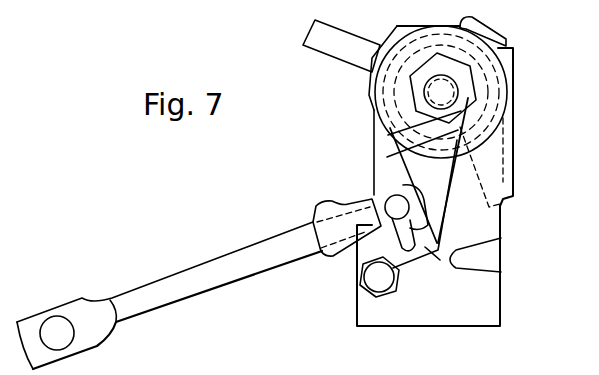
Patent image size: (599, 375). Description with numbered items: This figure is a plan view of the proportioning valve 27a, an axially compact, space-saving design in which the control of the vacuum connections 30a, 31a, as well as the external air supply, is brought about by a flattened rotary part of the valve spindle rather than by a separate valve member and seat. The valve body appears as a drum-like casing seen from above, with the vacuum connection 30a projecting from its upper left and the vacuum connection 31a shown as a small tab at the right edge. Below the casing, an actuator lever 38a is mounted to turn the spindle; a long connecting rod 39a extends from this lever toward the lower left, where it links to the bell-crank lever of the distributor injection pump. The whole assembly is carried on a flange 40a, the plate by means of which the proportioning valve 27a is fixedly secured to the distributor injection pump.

The proportioning valve 27a is at (357, 100).
The vacuum connection 30a is at (340, 58).
The vacuum connection 31a is at (517, 192).
The actuator lever 38a is at (392, 183).
The connecting rod 39a is at (210, 268).
The flange 40a is at (392, 302).